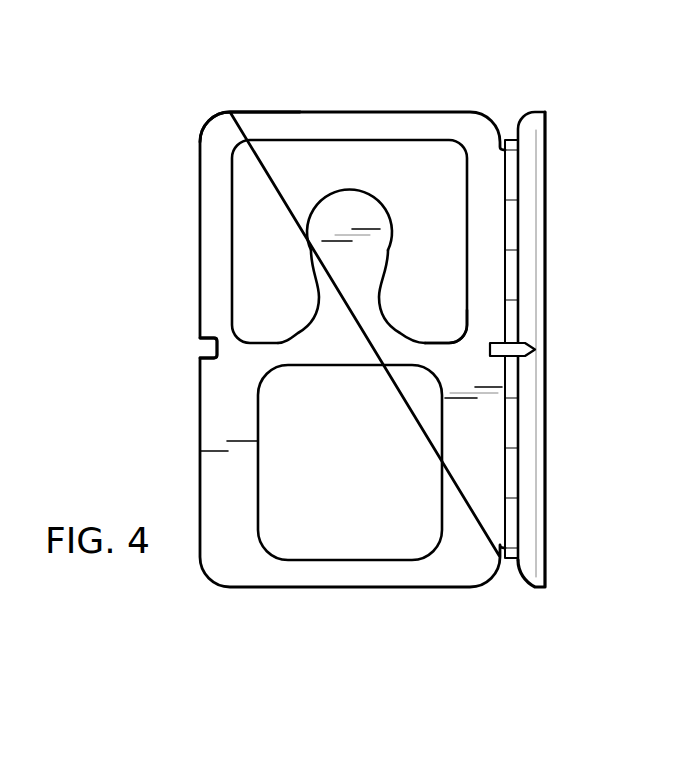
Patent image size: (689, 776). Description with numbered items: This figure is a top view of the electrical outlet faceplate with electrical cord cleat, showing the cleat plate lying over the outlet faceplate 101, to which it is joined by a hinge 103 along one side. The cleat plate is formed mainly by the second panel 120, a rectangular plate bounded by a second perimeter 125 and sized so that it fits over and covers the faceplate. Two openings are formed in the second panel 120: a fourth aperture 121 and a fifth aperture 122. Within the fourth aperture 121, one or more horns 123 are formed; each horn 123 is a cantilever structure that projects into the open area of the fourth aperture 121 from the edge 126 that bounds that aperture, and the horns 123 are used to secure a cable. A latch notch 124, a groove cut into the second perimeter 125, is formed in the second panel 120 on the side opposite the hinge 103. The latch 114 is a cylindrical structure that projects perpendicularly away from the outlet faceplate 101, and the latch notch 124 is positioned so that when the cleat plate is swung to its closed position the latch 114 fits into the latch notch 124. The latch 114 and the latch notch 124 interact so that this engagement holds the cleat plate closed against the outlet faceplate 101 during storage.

The outlet faceplate 101 is at (545, 250).
The hinge 103 is at (512, 140).
The latch 114 is at (517, 346).
The second panel 120 is at (337, 130).
The fourth aperture 121 is at (363, 160).
The fifth aperture 122 is at (345, 505).
The horns 123 is at (362, 257).
The latch notch 124 is at (212, 345).
The second perimeter 125 is at (245, 112).
The edge 126 is at (438, 343).